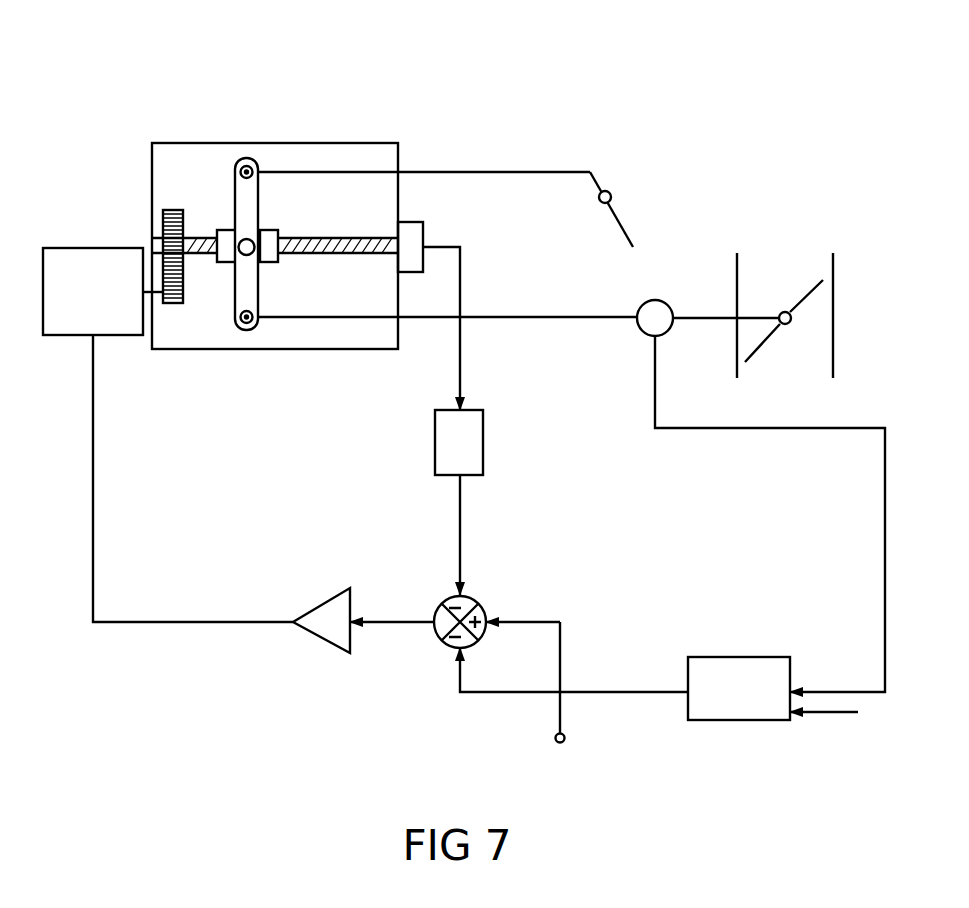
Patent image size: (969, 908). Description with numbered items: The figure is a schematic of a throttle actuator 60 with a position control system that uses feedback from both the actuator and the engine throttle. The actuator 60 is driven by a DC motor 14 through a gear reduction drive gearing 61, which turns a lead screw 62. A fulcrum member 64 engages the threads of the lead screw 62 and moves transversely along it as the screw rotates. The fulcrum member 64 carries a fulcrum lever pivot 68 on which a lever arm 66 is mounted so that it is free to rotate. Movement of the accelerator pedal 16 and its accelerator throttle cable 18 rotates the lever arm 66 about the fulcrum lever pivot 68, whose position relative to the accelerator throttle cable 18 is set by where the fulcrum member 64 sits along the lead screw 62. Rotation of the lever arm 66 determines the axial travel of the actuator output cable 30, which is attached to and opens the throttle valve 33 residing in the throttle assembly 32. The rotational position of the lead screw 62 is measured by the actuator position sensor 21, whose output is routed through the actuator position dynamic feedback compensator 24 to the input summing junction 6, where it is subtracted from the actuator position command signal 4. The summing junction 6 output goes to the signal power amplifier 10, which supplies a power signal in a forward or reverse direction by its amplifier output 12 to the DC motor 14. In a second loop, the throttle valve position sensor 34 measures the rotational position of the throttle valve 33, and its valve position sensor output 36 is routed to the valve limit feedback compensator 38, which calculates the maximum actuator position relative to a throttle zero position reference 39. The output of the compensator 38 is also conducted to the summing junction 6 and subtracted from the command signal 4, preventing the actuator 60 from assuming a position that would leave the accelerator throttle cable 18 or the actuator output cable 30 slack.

The actuator position command signal 4 is at (555, 727).
The input summing junction 6 is at (482, 600).
The signal power amplifier 10 is at (320, 602).
The amplifier output 12 is at (95, 405).
The DC motor 14 is at (98, 248).
The accelerator pedal 16 is at (620, 225).
The accelerator throttle cable 18 is at (485, 172).
The actuator position sensor 21 is at (425, 233).
The actuator position dynamic feedback compensator 24 is at (435, 438).
The actuator output cable 30 is at (560, 318).
The throttle assembly 32 is at (835, 290).
The throttle valve 33 is at (755, 355).
The throttle valve position sensor 34 is at (641, 304).
The valve position sensor output 36 is at (885, 448).
The valve limit feedback compensator 38 is at (745, 657).
The throttle zero position reference 39 is at (838, 712).
The throttle actuator 60 is at (325, 140).
The gear reduction drive gearing 61 is at (176, 210).
The lead screw 62 is at (340, 238).
The fulcrum member 64 is at (272, 262).
The lever arm 66 is at (260, 185).
The fulcrum lever pivot 68 is at (240, 239).